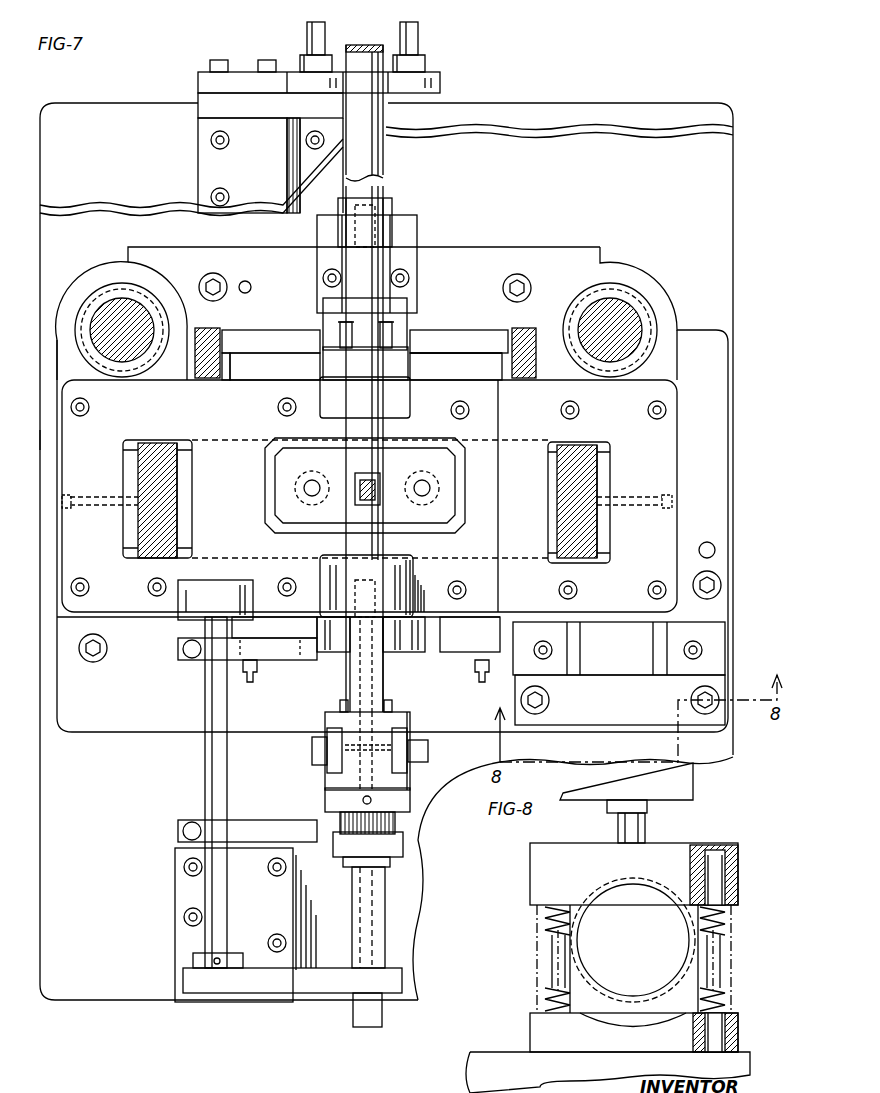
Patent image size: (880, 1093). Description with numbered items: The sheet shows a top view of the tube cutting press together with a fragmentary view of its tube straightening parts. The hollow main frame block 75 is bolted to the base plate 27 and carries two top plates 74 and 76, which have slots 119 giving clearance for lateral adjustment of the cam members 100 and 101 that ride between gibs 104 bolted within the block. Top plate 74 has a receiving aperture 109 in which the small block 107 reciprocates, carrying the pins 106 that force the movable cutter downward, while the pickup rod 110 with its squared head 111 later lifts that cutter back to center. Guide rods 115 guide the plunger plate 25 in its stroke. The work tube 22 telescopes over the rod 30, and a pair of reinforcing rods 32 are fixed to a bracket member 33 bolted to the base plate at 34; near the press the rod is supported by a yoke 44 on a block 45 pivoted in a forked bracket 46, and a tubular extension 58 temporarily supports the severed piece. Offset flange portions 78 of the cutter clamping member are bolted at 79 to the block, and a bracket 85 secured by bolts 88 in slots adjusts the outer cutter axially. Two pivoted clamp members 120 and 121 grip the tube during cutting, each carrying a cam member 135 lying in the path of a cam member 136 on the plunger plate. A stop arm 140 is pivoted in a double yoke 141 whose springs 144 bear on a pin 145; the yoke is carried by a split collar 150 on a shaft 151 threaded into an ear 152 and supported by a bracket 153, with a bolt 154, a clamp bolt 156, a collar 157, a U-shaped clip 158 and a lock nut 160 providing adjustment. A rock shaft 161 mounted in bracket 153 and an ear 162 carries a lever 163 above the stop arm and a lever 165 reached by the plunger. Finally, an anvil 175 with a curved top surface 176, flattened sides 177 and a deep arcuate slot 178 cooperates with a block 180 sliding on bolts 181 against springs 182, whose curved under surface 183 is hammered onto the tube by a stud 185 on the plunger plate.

In FIG. 8, the tube 22 is at (608, 1002).
In FIG. 8, the plunger plate 25 is at (696, 782).
In FIG. 7, the base plate 27 is at (58, 1002).
In FIG. 7, the rod 30 is at (386, 168).
In FIG. 7, the reinforcing rods 32 is at (326, 30).
In FIG. 7, the bracket member 33 is at (290, 73).
In FIG. 7, the bolting of bracket member 34 is at (205, 162).
In FIG. 7, the yoke 44 is at (395, 205).
In FIG. 7, the block 45 is at (393, 222).
In FIG. 7, the forked bracket 46 is at (418, 236).
In FIG. 7, the tubular extension 58 is at (425, 610).
In FIG. 7, the top plate 74 is at (62, 440).
In FIG. 7, the main frame block 75 is at (497, 262).
In FIG. 8, the main frame block 75 is at (468, 1080).
In FIG. 7, the top plate 76 is at (680, 438).
In FIG. 7, the flange portions 78 is at (510, 622).
In FIG. 7, the bolts 79 is at (251, 684).
In FIG. 7, the bracket 85 is at (330, 370).
In FIG. 7, the bolts 88 is at (382, 328).
In FIG. 7, the cam member 100 is at (157, 446).
In FIG. 7, the cam member 101 is at (588, 448).
In FIG. 7, the bearing plates or gibs 104 is at (130, 470).
In FIG. 7, the pins 106 is at (312, 471).
In FIG. 7, the block or plate 107 is at (272, 470).
In FIG. 7, the receiving aperture 109 is at (272, 500).
In FIG. 7, the rod 110 is at (373, 500).
In FIG. 7, the squared head 111 is at (364, 473).
In FIG. 7, the guide rods 115 is at (108, 312).
In FIG. 7, the slots 119 is at (185, 520).
In FIG. 7, the clamp member 120 is at (448, 366).
In FIG. 7, the clamp member 121 is at (258, 370).
In FIG. 7, the cam member 135 is at (262, 338).
In FIG. 7, the cam member 136 is at (210, 372).
In FIG. 7, the stop arm 140 is at (352, 674).
In FIG. 7, the double yoke 141 is at (330, 768).
In FIG. 7, the springs 144 is at (395, 708).
In FIG. 7, the pin 145 is at (390, 700).
In FIG. 7, the split collar 150 is at (410, 780).
In FIG. 7, the rod or shaft 151 is at (372, 922).
In FIG. 7, the ear 152 is at (420, 562).
In FIG. 7, the bracket 153 is at (338, 1000).
In FIG. 7, the bolt 154 is at (312, 752).
In FIG. 7, the clamp bolt 156 is at (428, 750).
In FIG. 7, the collar 157 is at (403, 845).
In FIG. 7, the U-shaped clip 158 is at (392, 865).
In FIG. 7, the lock nut 160 is at (402, 808).
In FIG. 7, the rock shaft 161 is at (207, 784).
In FIG. 7, the ear 162 is at (232, 582).
In FIG. 7, the lever 163 is at (276, 822).
In FIG. 7, the lever 165 is at (304, 648).
In FIG. 7, the anvil 175 is at (668, 640).
In FIG. 8, the anvil 175 is at (606, 890).
In FIG. 8, the top surface 176 is at (633, 878).
In FIG. 8, the sides 177 is at (560, 957).
In FIG. 8, the arcuate slot 178 is at (640, 1005).
In FIG. 7, the block 180 is at (722, 684).
In FIG. 8, the block 180 is at (688, 862).
In FIG. 7, the bolts 181 is at (552, 700).
In FIG. 8, the bolts 181 is at (548, 958).
In FIG. 8, the springs 182 is at (543, 920).
In FIG. 8, the cylindrically curved under surface 183 is at (643, 882).
In FIG. 8, the stud 185 is at (648, 830).